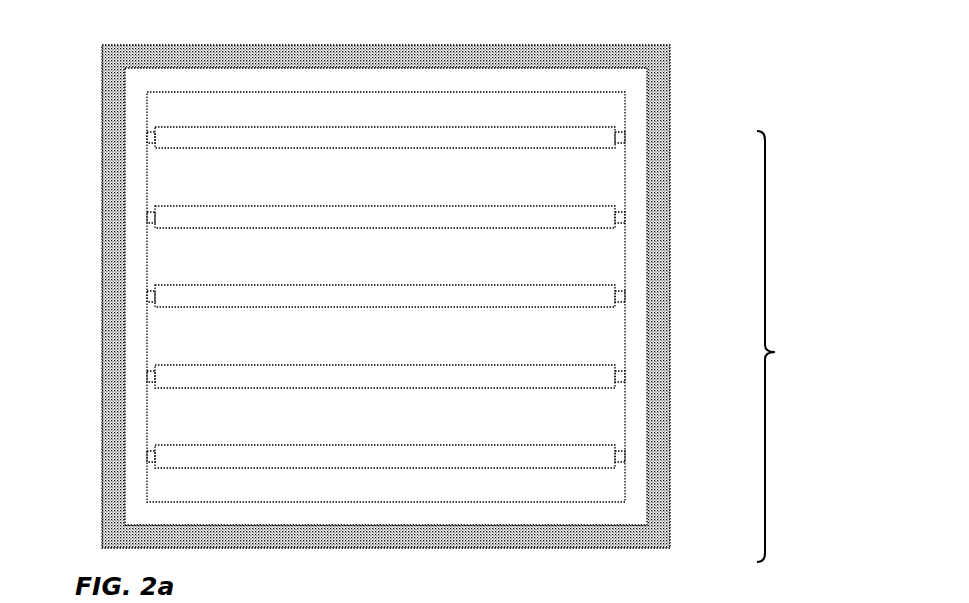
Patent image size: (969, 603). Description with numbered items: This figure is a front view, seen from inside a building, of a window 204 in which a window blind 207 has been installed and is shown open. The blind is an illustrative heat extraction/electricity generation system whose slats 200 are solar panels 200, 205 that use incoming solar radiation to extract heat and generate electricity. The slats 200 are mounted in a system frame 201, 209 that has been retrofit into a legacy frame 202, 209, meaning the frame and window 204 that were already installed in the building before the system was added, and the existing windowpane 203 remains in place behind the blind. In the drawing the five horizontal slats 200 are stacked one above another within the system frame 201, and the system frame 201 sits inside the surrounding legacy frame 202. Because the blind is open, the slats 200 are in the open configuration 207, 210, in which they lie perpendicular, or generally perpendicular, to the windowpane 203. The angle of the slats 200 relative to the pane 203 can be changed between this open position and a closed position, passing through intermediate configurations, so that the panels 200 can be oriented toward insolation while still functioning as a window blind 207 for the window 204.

The slats 200 is at (451, 334).
The light source 205 is at (451, 334).
The system frame 201 is at (440, 296).
The frame / border 209 is at (386, 276).
The legacy frame 202 is at (386, 276).
The windowpane 203 is at (332, 297).
The window 204 is at (433, 294).
The window blind 207 is at (807, 346).
The open configuration 210 is at (807, 346).